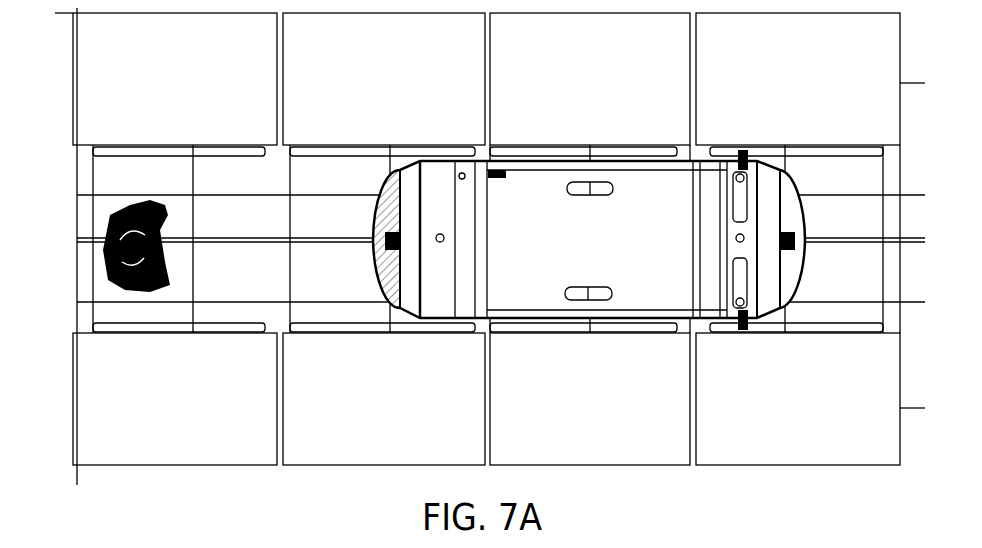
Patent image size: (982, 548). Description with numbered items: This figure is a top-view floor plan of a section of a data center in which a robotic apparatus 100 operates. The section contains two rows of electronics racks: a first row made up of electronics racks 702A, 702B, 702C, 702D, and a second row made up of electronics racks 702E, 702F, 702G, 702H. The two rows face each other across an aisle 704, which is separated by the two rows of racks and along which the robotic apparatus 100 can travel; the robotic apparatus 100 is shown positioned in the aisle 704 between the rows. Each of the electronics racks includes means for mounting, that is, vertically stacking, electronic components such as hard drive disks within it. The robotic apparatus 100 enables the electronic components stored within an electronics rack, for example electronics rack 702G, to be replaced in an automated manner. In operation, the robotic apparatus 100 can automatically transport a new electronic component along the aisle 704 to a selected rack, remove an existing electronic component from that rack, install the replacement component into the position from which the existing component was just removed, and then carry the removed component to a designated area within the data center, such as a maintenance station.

The robotic apparatus 100 is at (546, 240).
The aisle 704 is at (518, 239).
The electronics rack 702A is at (201, 94).
The electronics rack 702B is at (400, 94).
The electronics rack 702C is at (606, 94).
The electronics rack 702D is at (813, 94).
The electronics rack 702E is at (201, 419).
The electronics rack 702F is at (400, 419).
The electronics rack 702G is at (606, 419).
The electronics rack 702H is at (813, 419).